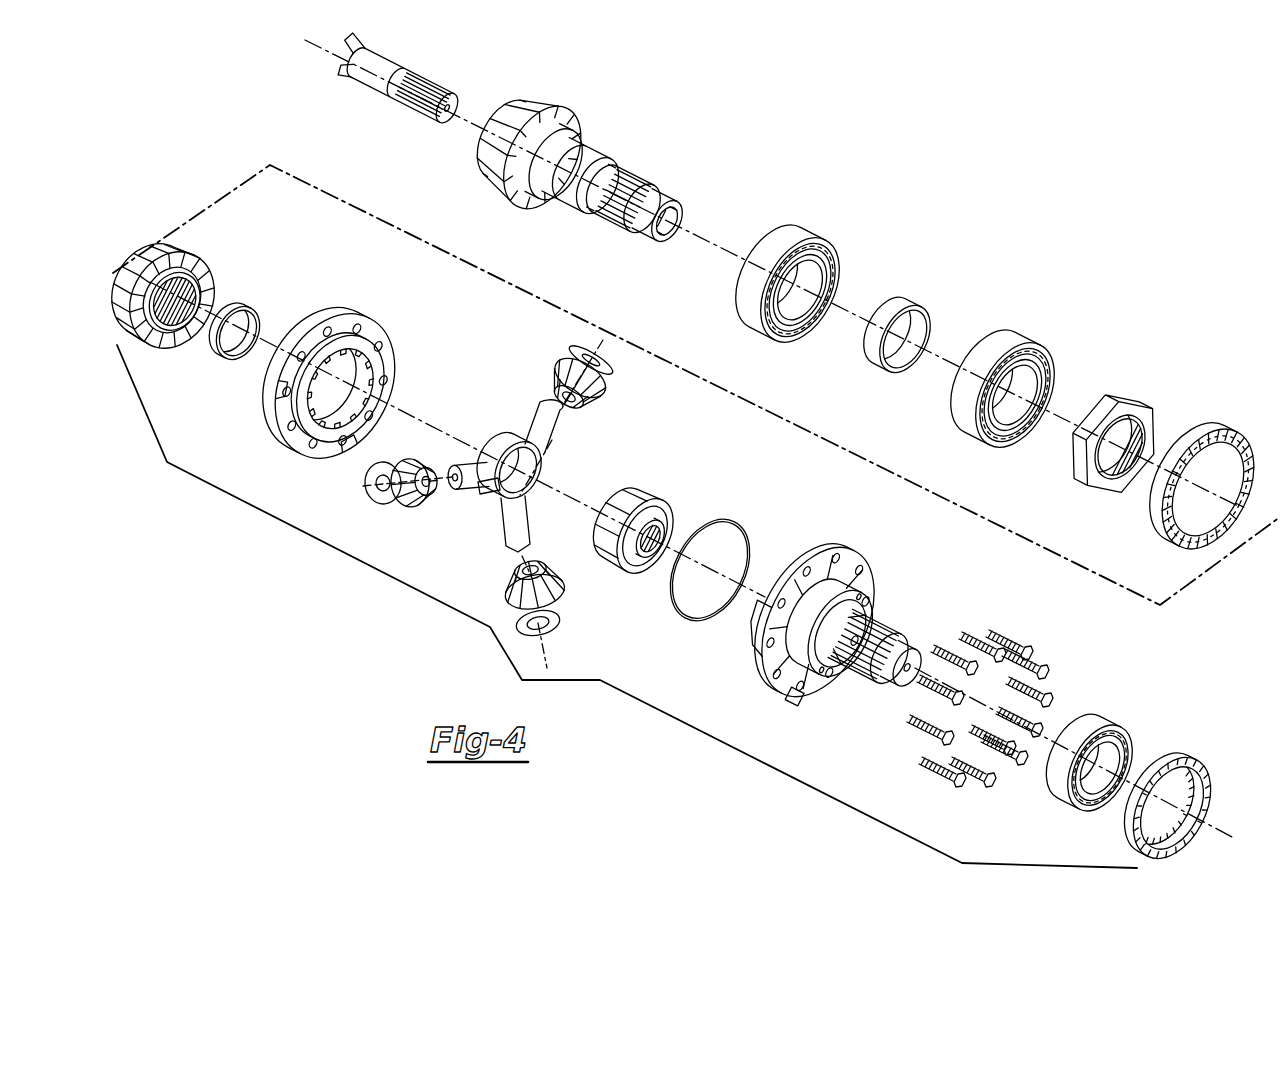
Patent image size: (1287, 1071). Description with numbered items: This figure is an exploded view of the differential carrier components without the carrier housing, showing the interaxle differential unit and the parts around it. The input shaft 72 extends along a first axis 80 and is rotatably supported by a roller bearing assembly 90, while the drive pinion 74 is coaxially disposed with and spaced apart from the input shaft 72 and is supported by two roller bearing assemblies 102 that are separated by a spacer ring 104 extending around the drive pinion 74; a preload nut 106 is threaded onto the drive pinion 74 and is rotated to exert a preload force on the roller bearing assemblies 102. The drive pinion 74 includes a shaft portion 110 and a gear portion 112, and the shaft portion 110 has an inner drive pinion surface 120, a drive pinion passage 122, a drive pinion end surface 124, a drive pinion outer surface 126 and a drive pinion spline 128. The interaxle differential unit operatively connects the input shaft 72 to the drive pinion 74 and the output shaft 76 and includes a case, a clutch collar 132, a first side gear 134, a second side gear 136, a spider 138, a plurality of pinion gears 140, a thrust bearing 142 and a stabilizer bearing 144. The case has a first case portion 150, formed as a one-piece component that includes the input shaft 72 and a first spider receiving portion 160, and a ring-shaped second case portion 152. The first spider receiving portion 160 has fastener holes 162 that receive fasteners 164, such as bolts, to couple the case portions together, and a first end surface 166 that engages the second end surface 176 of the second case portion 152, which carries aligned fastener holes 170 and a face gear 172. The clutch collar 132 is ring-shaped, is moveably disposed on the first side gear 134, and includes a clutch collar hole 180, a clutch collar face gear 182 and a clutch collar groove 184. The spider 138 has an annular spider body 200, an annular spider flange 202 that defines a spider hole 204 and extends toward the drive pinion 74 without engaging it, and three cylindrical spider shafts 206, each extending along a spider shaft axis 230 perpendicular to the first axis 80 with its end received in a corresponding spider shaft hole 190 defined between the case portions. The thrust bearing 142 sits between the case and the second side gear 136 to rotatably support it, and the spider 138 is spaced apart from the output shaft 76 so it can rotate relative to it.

The input shaft 72 is at (915, 662).
The drive pinion 74 is at (613, 172).
The output shaft 76 is at (378, 88).
The first axis 80 is at (1235, 828).
The roller bearing assemblies 90 is at (1083, 730).
The roller bearing assemblies 102 is at (802, 232).
The spacer ring 104 is at (906, 302).
The preload nut 106 is at (1136, 400).
The shaft portion 110 is at (566, 170).
The gear portion 112 is at (508, 115).
The inner drive pinion surface 120 is at (669, 228).
The drive pinion passage 122 is at (684, 230).
The drive pinion end surface 124 is at (676, 214).
The drive pinion outer surface 126 is at (650, 222).
The drive pinion spline 128 is at (653, 188).
The clutch collar 132 is at (1157, 532).
The first side gear 134 is at (195, 252).
The second side gear 136 is at (645, 484).
The spider 138 is at (522, 466).
The pinion gears 140 is at (420, 507).
The thrust bearing 142 is at (732, 525).
The stabilizer bearing 144 is at (243, 306).
The first case portion 150 is at (794, 619).
The second case portion 152 is at (328, 371).
The first spider receiving portion 160 is at (838, 690).
The fastener holes 162 is at (813, 692).
The fastener 164 is at (987, 725).
The first end surface 166 is at (757, 625).
The fastener holes 170 is at (340, 455).
The face gear 172 is at (330, 404).
The second end surface 176 is at (363, 318).
The clutch collar hole 180 is at (1178, 489).
The clutch collar face gear 182 is at (1198, 553).
The clutch collar groove 184 is at (1155, 503).
The spider shaft holes 190 is at (380, 338).
The annular spider body 200 is at (540, 466).
The annular spider flange 202 is at (499, 434).
The spider hole 204 is at (538, 476).
The spider shafts 206 is at (537, 420).
The spider shaft axis 230 is at (387, 487).